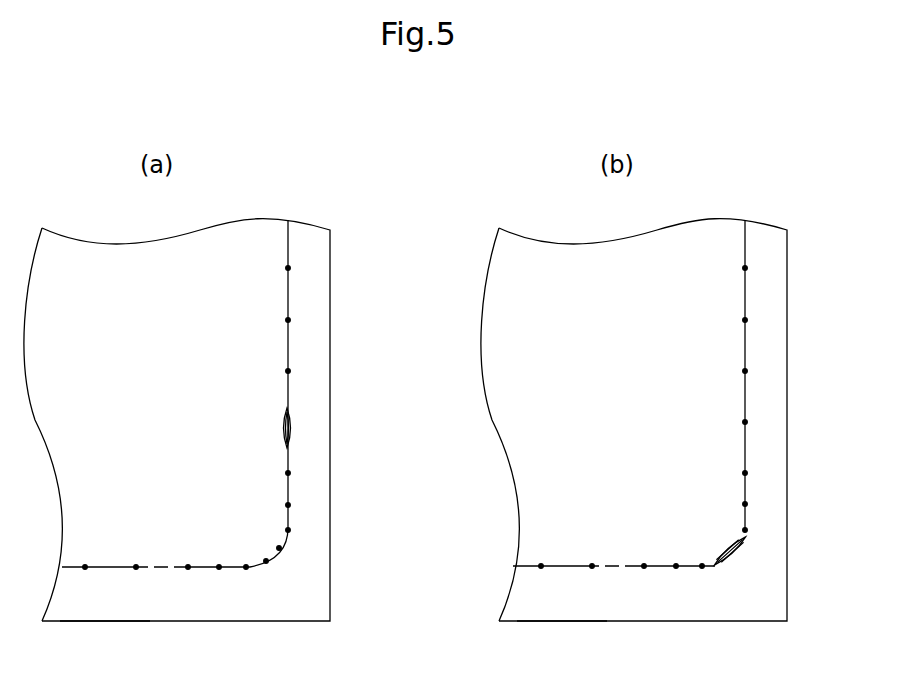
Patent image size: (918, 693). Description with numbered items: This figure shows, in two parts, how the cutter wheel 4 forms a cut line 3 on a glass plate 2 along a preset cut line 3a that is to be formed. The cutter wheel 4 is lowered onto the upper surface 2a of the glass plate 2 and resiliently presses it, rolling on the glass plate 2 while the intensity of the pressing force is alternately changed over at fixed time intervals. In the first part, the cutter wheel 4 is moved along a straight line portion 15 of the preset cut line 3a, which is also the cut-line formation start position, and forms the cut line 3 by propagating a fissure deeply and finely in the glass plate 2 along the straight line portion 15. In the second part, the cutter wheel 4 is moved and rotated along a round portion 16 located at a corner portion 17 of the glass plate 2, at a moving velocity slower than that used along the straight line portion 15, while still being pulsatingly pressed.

The glass plate 2 is at (78, 609).
The upper surface 2a is at (120, 609).
The cut line 3 is at (289, 378).
The cut line 3a is at (289, 515).
The cutter wheel 4 is at (296, 428).
The straight line portion 15 is at (289, 488).
The round portion 16 is at (283, 545).
The corner portion 17 is at (276, 568).